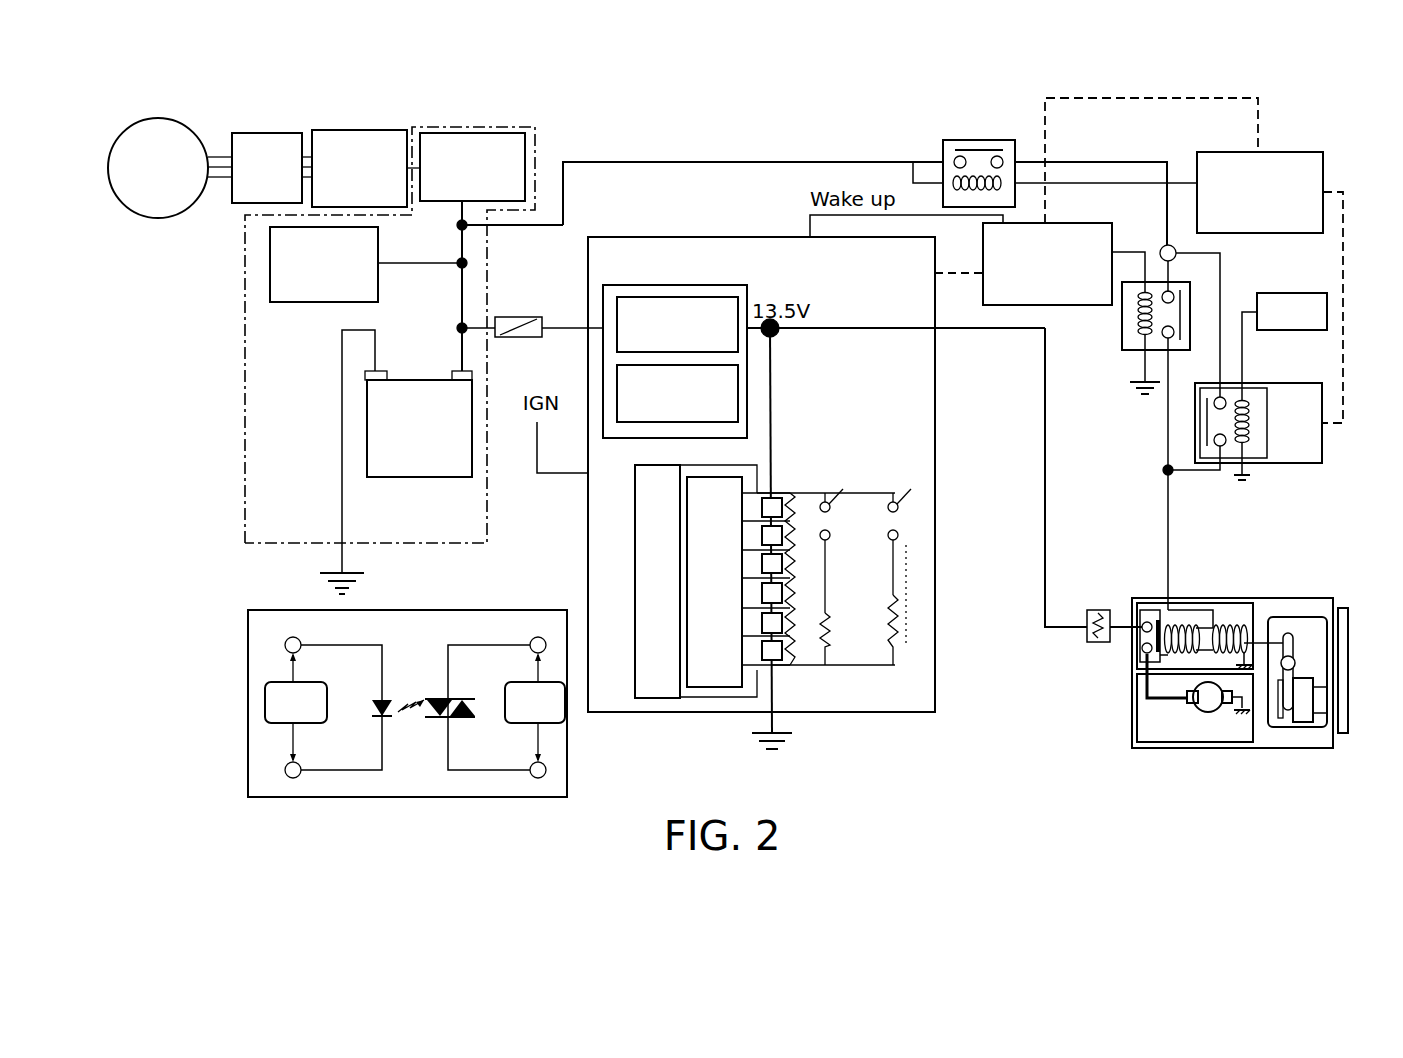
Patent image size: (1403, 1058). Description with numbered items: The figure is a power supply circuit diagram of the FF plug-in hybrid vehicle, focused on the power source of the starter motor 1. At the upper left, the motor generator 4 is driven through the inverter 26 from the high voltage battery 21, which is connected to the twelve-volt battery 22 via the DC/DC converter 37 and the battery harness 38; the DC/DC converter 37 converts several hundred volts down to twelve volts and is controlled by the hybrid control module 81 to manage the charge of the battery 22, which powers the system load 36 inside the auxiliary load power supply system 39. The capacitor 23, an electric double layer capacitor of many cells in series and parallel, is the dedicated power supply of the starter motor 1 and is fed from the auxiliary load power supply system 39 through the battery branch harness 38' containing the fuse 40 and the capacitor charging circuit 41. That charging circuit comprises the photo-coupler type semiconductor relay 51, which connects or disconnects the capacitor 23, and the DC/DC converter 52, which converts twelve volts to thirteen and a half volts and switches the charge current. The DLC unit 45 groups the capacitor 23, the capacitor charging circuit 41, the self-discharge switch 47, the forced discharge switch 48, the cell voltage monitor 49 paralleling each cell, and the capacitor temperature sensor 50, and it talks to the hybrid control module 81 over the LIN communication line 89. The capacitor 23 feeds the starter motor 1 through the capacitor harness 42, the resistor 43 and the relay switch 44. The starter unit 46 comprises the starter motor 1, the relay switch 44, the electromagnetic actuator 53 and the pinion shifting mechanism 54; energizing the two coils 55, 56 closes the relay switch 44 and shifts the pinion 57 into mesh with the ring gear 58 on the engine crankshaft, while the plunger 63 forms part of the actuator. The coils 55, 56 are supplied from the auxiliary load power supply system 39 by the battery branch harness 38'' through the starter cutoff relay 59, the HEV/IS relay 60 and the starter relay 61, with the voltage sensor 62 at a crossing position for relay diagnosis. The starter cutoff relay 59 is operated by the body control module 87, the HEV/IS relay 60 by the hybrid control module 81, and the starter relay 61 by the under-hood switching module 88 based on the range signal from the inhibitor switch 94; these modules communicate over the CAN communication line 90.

The starter motor 1 is at (1131, 734).
The motor generator 4 is at (166, 118).
The high voltage battery 21 is at (372, 130).
The 12V battery 22 is at (436, 462).
The capacitor 23 is at (775, 492).
The inverter 26 is at (288, 133).
The 12V system load 36 is at (292, 302).
The DC/DC converter 37 is at (488, 127).
The battery harness 38 is at (480, 286).
The battery branch harness 38' is at (569, 296).
The battery branch harness 38'' is at (753, 157).
The auxiliary load power supply system 39 is at (238, 443).
The fuse 40 is at (518, 316).
The capacitor charging circuit 41 is at (722, 284).
The capacitor harness 42 is at (1044, 402).
The resistor 43 is at (1098, 608).
The relay switch 44 is at (1150, 608).
The DLC unit 45 is at (860, 712).
The starter unit 46 is at (1232, 596).
The self-discharge switch 47 is at (834, 492).
The forced discharge switch 48 is at (896, 492).
The cell voltage monitor 49 is at (718, 697).
The capacitor temperature sensor 50 is at (652, 698).
The semiconductor relay 51 is at (660, 296).
The DC/DC converter 52 is at (625, 423).
The electromagnetic actuator 53 is at (1198, 602).
The pinion shifting mechanism 54 is at (1290, 616).
The coil 55 is at (1175, 657).
The coil 56 is at (1237, 622).
The pinion 57 is at (1318, 722).
The ring gear 58 is at (1348, 705).
The starter cutoff relay 59 is at (980, 140).
The HEV/IS relay 60 is at (1121, 330).
The starter relay 61 is at (1255, 400).
The voltage sensor 62 is at (1163, 245).
The plunger 63 is at (1295, 650).
The hybrid control module 81 is at (1072, 223).
The body control module 87 is at (1310, 151).
The under-hood switching module 88 is at (1300, 463).
The LIN communication line 89 is at (965, 271).
The CAN communication line 90 is at (1202, 97).
The inhibitor switch 94 is at (1278, 293).